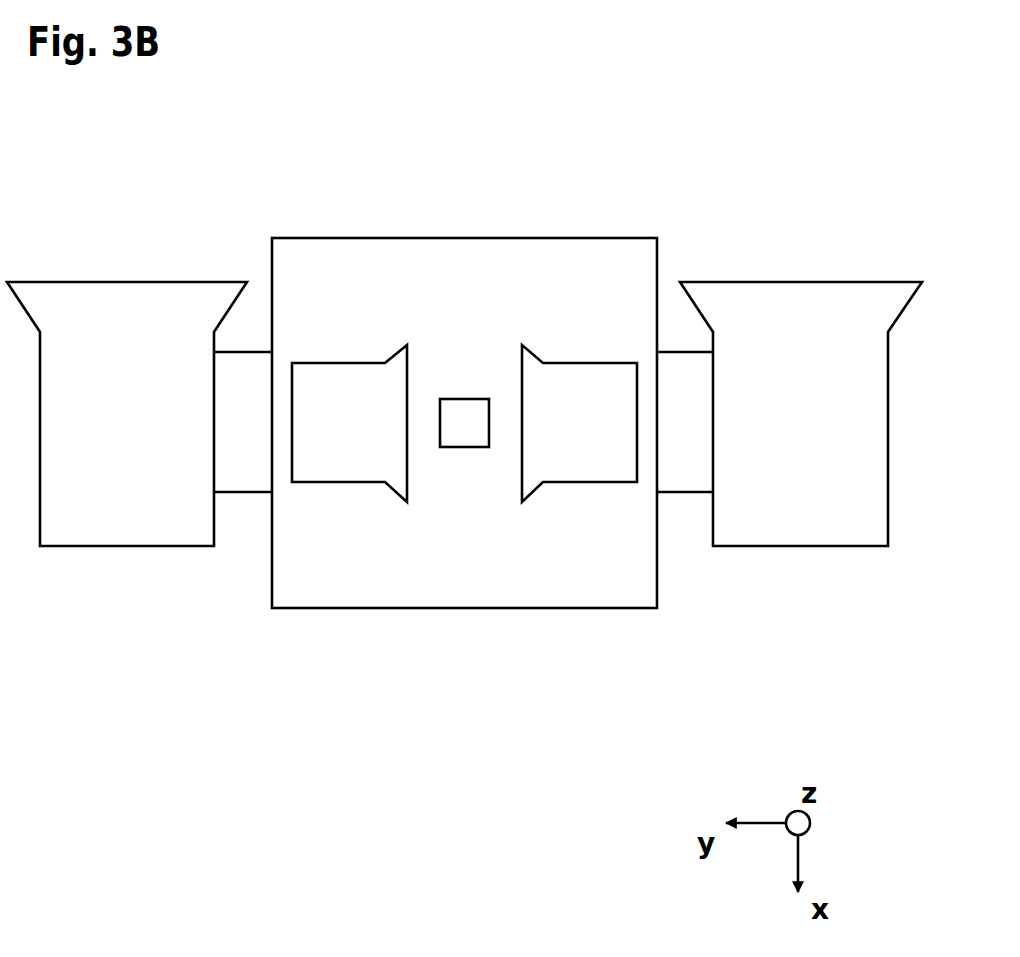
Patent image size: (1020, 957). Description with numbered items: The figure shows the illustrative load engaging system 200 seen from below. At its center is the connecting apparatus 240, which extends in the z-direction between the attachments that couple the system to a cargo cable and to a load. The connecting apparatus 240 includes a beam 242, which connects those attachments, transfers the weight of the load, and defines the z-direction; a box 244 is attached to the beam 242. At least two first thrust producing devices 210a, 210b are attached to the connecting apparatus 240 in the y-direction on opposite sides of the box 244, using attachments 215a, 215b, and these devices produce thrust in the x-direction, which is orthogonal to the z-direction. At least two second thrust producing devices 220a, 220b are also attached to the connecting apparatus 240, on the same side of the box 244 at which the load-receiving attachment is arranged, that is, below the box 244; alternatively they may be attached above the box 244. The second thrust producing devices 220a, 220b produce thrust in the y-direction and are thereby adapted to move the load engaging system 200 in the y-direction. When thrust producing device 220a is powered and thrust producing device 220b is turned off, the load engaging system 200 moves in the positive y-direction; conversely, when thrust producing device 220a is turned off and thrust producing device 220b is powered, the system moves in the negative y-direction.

The load engaging system 200 is at (211, 158).
The connecting apparatus 240 is at (668, 208).
The second thrust producing device 220a is at (347, 380).
The second thrust producing device 220b is at (598, 380).
The box 244 is at (465, 288).
The beam 242 is at (463, 422).
The attachment 215a is at (680, 465).
The attachment 215b is at (247, 465).
The first thrust producing device 210a is at (810, 498).
The first thrust producing device 210b is at (118, 498).